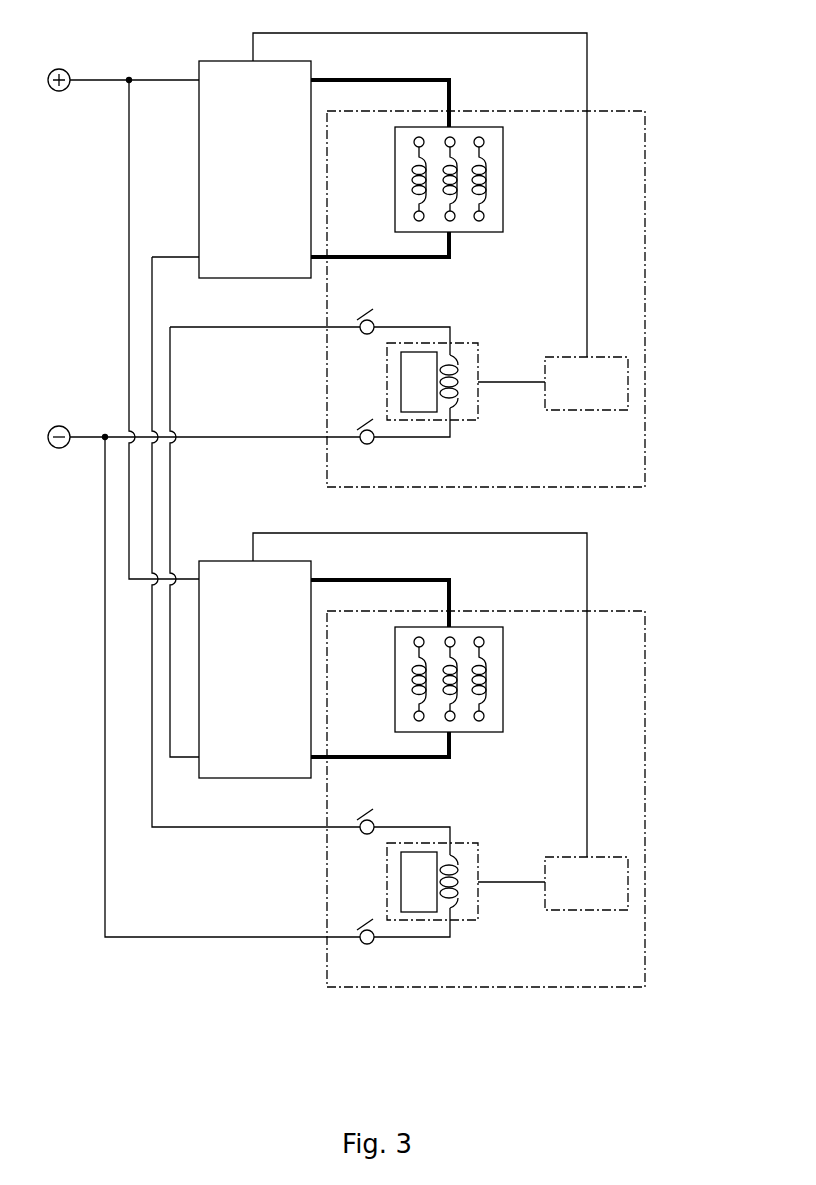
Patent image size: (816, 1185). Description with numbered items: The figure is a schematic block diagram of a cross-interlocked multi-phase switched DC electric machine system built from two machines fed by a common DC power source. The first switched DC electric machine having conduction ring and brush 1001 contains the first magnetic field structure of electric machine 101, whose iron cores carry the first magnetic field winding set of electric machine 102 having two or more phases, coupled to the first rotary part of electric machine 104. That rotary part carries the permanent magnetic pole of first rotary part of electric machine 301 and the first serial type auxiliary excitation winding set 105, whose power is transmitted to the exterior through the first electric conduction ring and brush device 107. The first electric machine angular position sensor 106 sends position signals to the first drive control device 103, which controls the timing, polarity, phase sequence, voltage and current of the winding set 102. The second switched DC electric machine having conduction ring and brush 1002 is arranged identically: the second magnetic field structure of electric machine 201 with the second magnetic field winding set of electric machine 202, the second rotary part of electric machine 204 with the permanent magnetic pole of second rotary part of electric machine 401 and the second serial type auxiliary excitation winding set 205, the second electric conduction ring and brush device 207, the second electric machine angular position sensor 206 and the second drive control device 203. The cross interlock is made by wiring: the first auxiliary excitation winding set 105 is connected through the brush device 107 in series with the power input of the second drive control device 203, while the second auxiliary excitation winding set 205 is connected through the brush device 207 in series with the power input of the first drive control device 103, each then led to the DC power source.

The first magnetic field structure of electric machine 101 is at (456, 179).
The first magnetic field winding set of electric machine 102 is at (417, 180).
The first drive control device 103 is at (230, 59).
The first rotary part of electric machine 104 is at (431, 379).
The first serial type auxiliary excitation winding set 105 is at (457, 402).
The first electric machine angular position sensor 106 is at (602, 412).
The first electric conduction ring and brush device 107 is at (377, 319).
The permanent magnetic pole of first rotary part of electric machine 301 is at (401, 388).
The first switched DC electric machine having conduction ring and brush 1001 is at (645, 172).
The second magnetic field structure of electric machine 201 is at (456, 679).
The second magnetic field winding set of electric machine 202 is at (417, 680).
The second drive control device 203 is at (213, 558).
The second rotary part of electric machine 204 is at (431, 879).
The second serial type auxiliary excitation winding set 205 is at (457, 902).
The second electric machine angular position sensor 206 is at (602, 912).
The second electric conduction ring and brush device 207 is at (377, 819).
The permanent magnetic pole of second rotary part of electric machine 401 is at (401, 888).
The second switched DC electric machine having conduction ring and brush 1002 is at (645, 672).